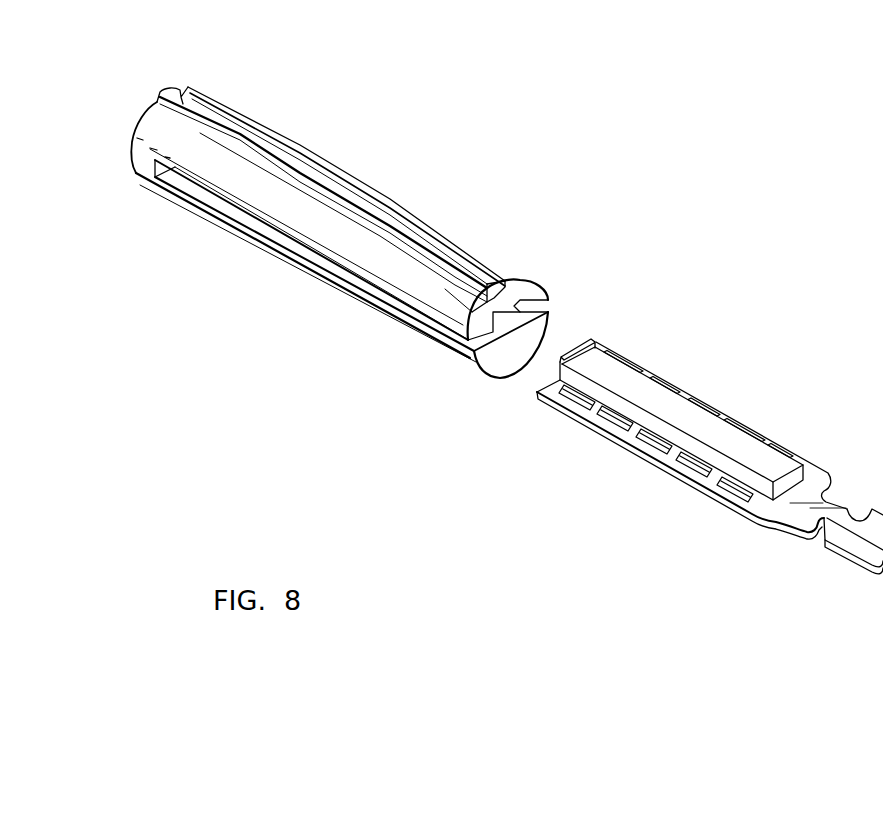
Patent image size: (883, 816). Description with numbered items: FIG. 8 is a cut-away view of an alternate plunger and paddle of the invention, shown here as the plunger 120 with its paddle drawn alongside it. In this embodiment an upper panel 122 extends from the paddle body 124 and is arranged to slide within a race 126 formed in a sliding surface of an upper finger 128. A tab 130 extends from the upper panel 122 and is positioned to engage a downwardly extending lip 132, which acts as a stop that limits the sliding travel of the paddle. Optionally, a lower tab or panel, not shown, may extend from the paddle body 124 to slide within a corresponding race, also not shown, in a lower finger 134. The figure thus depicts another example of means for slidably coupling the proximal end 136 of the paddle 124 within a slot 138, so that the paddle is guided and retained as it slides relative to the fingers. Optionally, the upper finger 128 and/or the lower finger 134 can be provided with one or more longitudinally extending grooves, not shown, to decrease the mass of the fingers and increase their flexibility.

The probe tube 120 is at (553, 267).
The upper panel 122 is at (723, 437).
The paddle body 124 is at (577, 447).
The race 126 is at (508, 305).
The upper finger 128 is at (468, 256).
The tab 130 is at (583, 334).
The downwardly extending lip 132 is at (440, 272).
The lower finger 134 is at (288, 262).
The proximal end 136 is at (626, 339).
The slot 138 is at (477, 340).